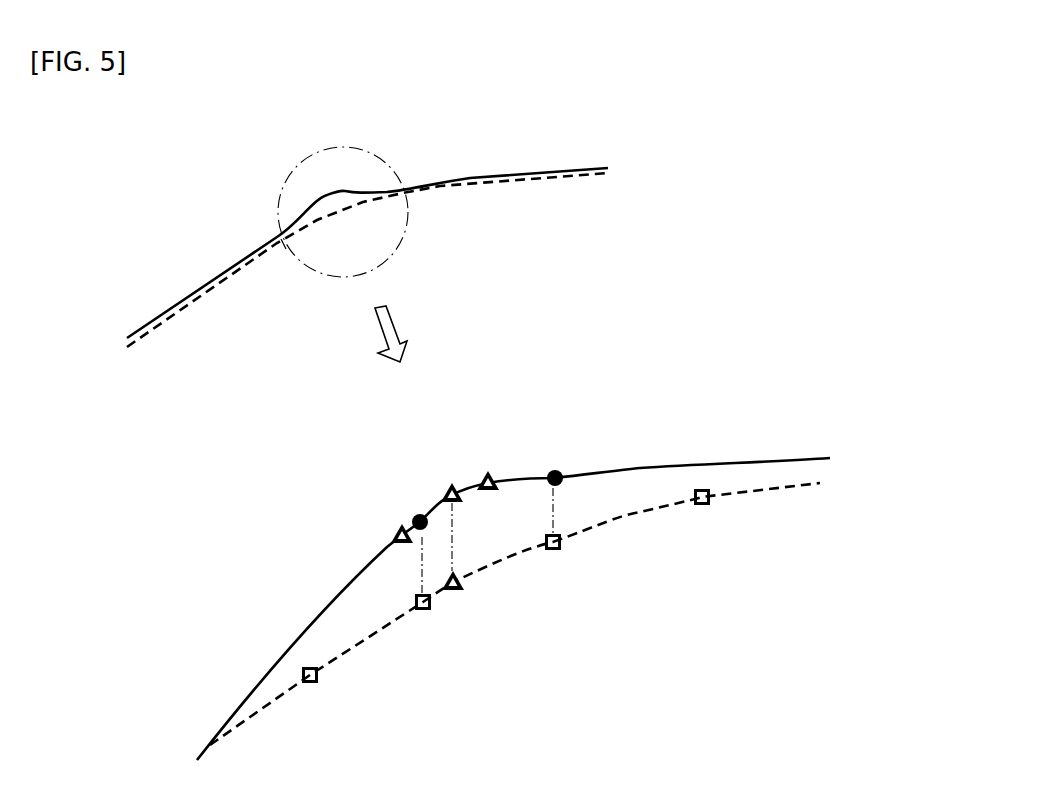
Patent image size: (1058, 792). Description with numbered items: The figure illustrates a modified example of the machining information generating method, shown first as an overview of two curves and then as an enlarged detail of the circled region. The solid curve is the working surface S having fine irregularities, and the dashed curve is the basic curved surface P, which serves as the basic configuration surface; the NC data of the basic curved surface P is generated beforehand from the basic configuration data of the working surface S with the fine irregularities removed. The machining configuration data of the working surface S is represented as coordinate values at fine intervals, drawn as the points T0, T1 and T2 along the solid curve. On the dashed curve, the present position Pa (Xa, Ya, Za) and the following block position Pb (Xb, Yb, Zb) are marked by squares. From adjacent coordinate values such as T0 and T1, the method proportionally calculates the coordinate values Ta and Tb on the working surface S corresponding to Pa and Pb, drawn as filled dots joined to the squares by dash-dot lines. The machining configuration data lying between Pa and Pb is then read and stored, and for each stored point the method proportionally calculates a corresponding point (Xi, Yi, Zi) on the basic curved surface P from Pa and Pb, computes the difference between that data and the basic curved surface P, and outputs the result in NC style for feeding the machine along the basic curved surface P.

The working surface S is at (550, 167).
The basic curved surface P is at (518, 182).
The coordinate value on working surface T0 is at (393, 530).
The coordinate value on working surface Ta is at (417, 517).
The coordinate value on working surface T1 is at (447, 492).
The coordinate value on working surface T2 is at (482, 477).
The coordinate value on working surface Tb is at (560, 460).
The present position Pa is at (427, 610).
The following block position Pb is at (563, 550).